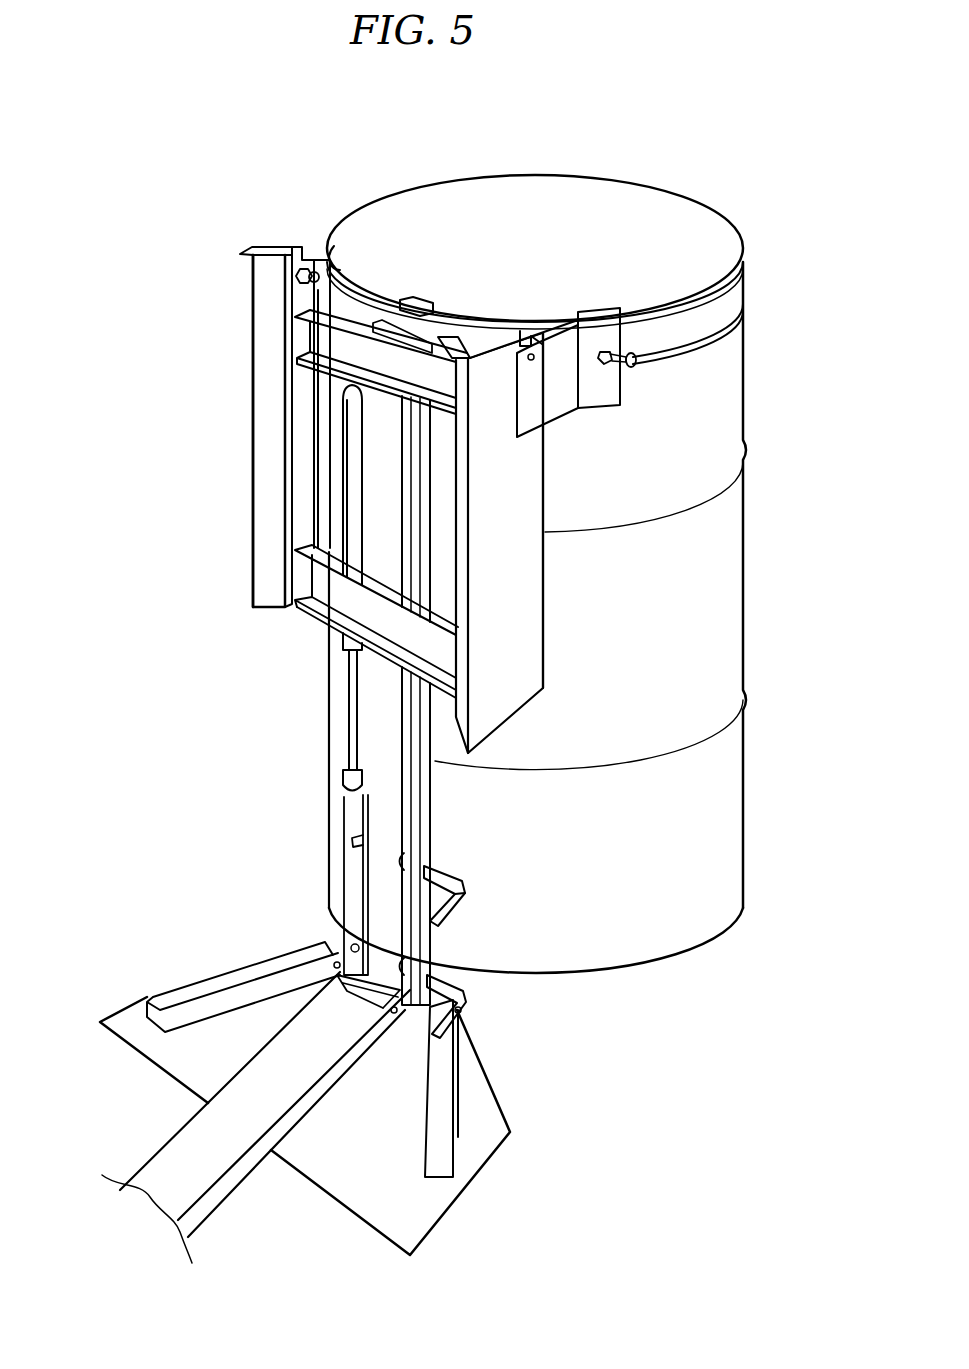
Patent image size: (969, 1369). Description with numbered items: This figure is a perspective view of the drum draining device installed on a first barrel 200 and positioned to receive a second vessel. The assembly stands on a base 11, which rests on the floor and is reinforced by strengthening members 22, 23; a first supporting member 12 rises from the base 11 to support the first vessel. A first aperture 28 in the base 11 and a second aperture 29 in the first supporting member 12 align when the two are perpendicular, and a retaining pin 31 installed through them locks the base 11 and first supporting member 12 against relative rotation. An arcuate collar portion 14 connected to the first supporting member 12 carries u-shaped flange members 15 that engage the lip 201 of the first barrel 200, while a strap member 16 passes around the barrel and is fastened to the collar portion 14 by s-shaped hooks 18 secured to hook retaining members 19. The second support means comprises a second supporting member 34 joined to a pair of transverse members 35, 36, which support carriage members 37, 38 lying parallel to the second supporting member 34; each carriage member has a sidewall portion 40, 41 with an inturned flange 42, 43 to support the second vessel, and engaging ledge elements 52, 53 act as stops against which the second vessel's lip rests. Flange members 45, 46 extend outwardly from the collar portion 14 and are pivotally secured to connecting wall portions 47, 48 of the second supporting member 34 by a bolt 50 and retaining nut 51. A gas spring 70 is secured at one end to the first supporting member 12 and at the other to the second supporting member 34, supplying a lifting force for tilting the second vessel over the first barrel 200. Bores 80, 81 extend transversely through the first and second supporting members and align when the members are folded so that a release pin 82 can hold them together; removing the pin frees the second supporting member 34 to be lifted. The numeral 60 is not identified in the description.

The base 11 is at (343, 1190).
The first supporting member 12 is at (425, 572).
The collar portion 14 is at (352, 306).
The flange members 15 is at (333, 254).
The strap member 16 is at (713, 330).
The hooks 18 is at (633, 364).
The hook retaining members 19 is at (606, 364).
The strengthening member 22 is at (175, 995).
The strengthening member 23 is at (440, 1142).
The first aperture 28 is at (433, 967).
The second aperture 29 is at (408, 960).
The retaining pin 31 is at (352, 946).
The second supporting member 34 is at (392, 701).
The transverse member 35 is at (381, 362).
The transverse member 36 is at (350, 605).
The carriage member 37 is at (253, 468).
The carriage member 38 is at (545, 568).
The sidewall portion 40 is at (298, 490).
The sidewall portion 41 is at (499, 543).
The inturned flange 42 is at (262, 406).
The inturned flange 43 is at (460, 686).
The flange member 45 is at (320, 258).
The flange member 46 is at (548, 397).
The connecting wall portion 47 is at (292, 247).
The connecting wall portion 48 is at (532, 338).
The bolt 50 is at (532, 361).
The retaining nut 51 is at (299, 268).
The engaging ledge element 52 is at (262, 247).
The engaging ledge element 53 is at (463, 337).
The base beam 60 is at (195, 1187).
The gas spring 70 is at (353, 553).
The bore 80 is at (432, 868).
The bore 81 is at (410, 860).
The release pin 82 is at (440, 868).
The first barrel 200 is at (536, 574).
The lip 201 is at (744, 252).